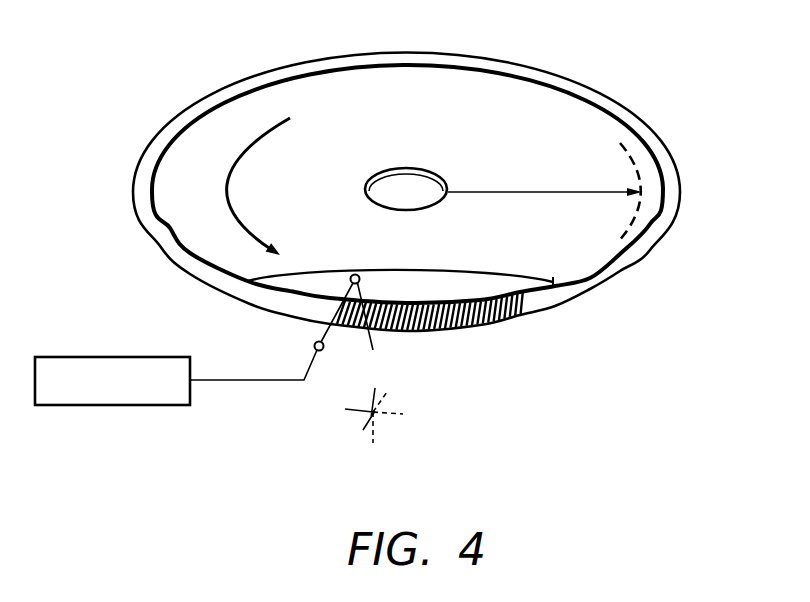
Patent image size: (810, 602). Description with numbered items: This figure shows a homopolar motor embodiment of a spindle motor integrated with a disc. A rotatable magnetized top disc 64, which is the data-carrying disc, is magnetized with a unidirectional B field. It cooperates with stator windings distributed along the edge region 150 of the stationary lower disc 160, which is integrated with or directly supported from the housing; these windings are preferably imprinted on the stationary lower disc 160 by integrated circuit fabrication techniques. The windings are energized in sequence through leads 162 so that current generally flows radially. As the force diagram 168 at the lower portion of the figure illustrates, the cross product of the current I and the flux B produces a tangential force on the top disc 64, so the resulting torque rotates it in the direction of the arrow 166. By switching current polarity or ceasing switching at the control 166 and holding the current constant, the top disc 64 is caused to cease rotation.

The rotatable magnetized top disc 64 is at (546, 110).
The stationary lower disc 160 is at (662, 246).
The edge region 150 is at (541, 304).
The leads 162 is at (324, 350).
The arrow / control 166 is at (229, 193).
The force diagram 168 is at (394, 429).